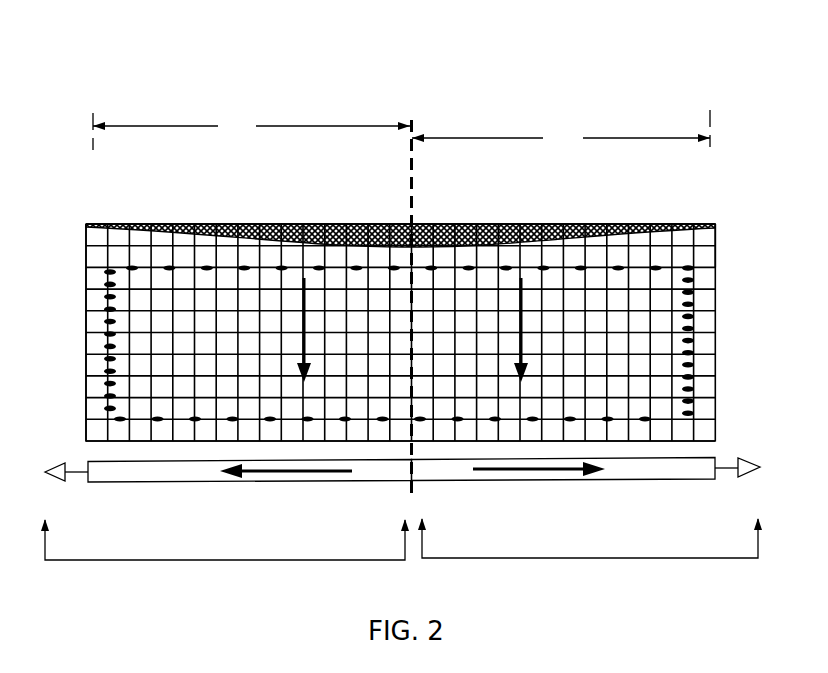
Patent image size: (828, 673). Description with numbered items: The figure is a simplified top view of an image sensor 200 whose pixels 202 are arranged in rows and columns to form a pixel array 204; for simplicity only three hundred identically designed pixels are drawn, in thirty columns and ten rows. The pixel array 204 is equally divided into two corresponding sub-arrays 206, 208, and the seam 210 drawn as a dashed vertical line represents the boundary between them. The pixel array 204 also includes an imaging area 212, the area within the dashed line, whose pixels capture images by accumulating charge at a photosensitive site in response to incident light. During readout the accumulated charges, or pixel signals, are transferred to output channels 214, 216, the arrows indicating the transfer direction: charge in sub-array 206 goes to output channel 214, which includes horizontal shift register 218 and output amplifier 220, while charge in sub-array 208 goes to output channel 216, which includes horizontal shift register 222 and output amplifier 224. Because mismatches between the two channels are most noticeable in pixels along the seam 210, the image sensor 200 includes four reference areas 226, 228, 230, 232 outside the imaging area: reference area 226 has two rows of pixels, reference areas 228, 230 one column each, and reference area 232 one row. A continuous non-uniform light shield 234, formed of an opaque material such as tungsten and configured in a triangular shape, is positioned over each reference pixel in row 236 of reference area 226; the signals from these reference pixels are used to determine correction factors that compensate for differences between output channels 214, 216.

The image sensor 200 is at (576, 75).
The pixels 202 is at (640, 301).
The pixel array 204 is at (86, 372).
The sub-array 206 is at (251, 126).
The sub-array 208 is at (561, 139).
The seam 210 is at (411, 293).
The imaging area 212 is at (705, 380).
The output channel 214 is at (225, 551).
The output channel 216 is at (590, 550).
The horizontal shift register 218 is at (173, 481).
The output amplifier 220 is at (70, 481).
The horizontal shift register 222 is at (674, 476).
The output amplifier 224 is at (745, 478).
The reference area 226 is at (726, 229).
The reference area 228 is at (706, 214).
The reference area 230 is at (93, 214).
The reference area 232 is at (78, 430).
The continuous non-uniform light shield 234 is at (360, 227).
The row 236 is at (78, 236).